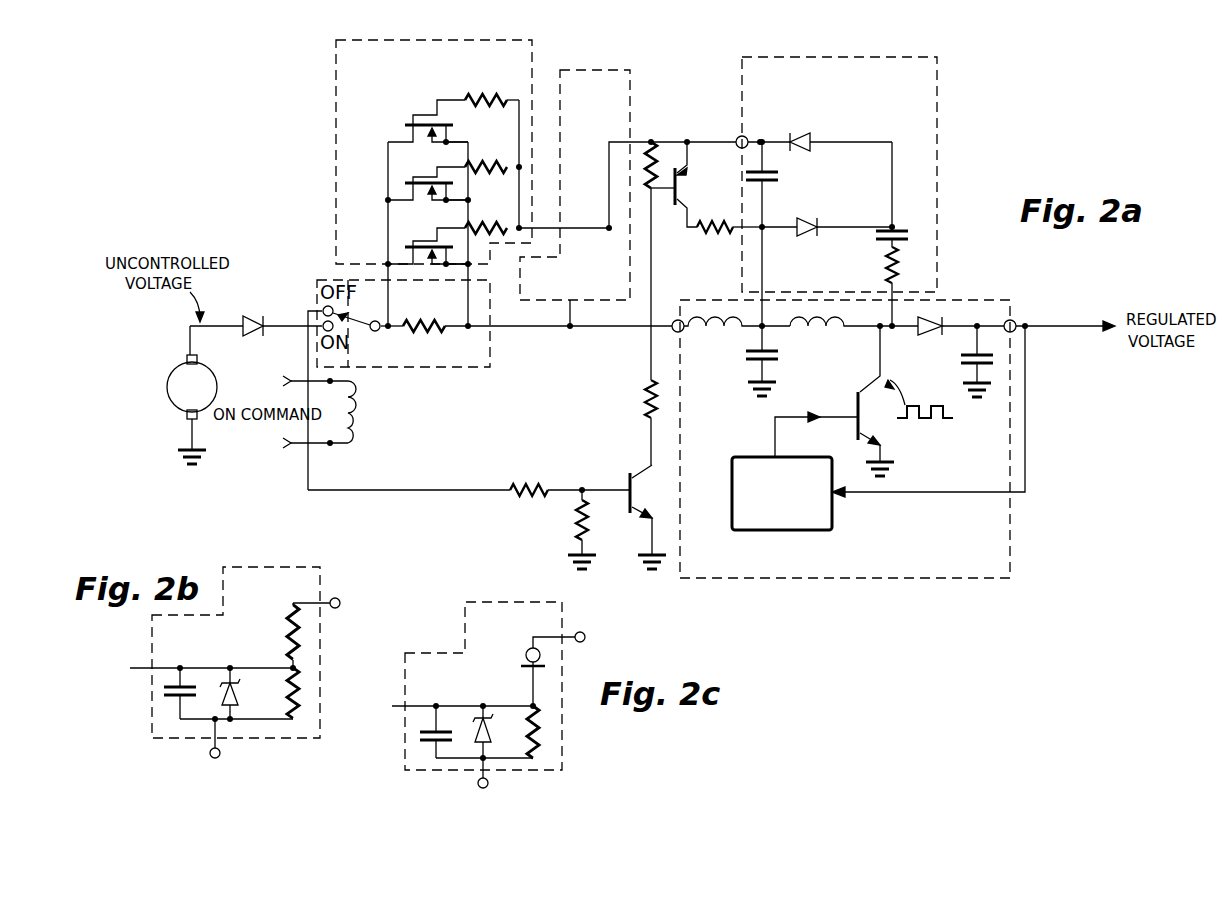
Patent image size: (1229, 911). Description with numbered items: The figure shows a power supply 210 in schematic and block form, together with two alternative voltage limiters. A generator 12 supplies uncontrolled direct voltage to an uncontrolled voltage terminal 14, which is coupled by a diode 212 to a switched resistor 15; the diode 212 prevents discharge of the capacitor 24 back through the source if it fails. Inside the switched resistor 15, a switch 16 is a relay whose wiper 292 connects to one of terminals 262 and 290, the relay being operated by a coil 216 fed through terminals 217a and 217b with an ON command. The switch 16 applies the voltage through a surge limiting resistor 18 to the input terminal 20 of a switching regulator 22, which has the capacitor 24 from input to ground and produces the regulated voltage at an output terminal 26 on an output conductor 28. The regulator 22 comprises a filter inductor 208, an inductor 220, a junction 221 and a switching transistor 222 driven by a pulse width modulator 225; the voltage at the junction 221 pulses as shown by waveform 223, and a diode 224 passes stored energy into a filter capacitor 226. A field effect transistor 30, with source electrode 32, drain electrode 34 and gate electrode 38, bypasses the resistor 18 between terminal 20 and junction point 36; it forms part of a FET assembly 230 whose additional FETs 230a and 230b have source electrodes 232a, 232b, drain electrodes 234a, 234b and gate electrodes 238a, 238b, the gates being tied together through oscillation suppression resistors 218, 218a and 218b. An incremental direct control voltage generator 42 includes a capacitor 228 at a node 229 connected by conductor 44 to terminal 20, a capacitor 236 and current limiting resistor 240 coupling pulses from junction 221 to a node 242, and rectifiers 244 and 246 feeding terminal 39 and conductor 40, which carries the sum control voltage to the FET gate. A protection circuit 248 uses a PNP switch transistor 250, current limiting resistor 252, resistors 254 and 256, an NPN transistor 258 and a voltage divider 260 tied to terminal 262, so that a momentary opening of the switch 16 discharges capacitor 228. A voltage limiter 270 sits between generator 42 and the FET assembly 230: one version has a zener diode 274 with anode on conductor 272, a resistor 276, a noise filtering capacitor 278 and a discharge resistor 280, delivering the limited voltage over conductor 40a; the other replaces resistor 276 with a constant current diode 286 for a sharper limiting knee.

In FIG. 2A, the generator 12 is at (213, 364).
In FIG. 2A, the uncontrolled voltage terminal 14 is at (225, 322).
In FIG. 2A, the switched resistor 15 is at (468, 369).
In FIG. 2A, the switch 16 is at (366, 303).
In FIG. 2A, the surge limiting resistor 18 is at (428, 322).
In FIG. 2A, the input terminal 20 is at (676, 321).
In FIG. 2B, the input terminal 20 is at (220, 755).
In FIG. 2C, the input terminal 20 is at (478, 790).
In FIG. 2A, the switching regulator 22 is at (864, 457).
In FIG. 2A, the capacitor 24 is at (772, 369).
In FIG. 2A, the output terminal 26 is at (1014, 322).
In FIG. 2A, the output conductor 28 is at (1085, 336).
In FIG. 2A, the field effect transistor 30 is at (415, 247).
In FIG. 2A, the source electrode 32 is at (469, 264).
In FIG. 2A, the drain electrode 34 is at (405, 247).
In FIG. 2A, the junction point 36 is at (390, 330).
In FIG. 2A, the gate electrode 38 is at (426, 258).
In FIG. 2A, the terminal 39 is at (738, 138).
In FIG. 2B, the terminal 39 is at (340, 603).
In FIG. 2A, the conductor 40 is at (688, 138).
In FIG. 2B, the conductor 40 is at (330, 601).
In FIG. 2C, the conductor 40 is at (565, 637).
In FIG. 2A, the conductor 40a is at (548, 240).
In FIG. 2B, the conductor 40a is at (141, 668).
In FIG. 2C, the conductor 40a is at (397, 706).
In FIG. 2A, the incremental direct control voltage generator 42 is at (937, 122).
In FIG. 2A, the conductor 44 is at (760, 302).
In FIG. 2A, the filter inductor 208 is at (730, 332).
In FIG. 2A, the power supply 210 is at (880, 613).
In FIG. 2A, the diode 212 is at (245, 316).
In FIG. 2A, the coil 216 is at (356, 406).
In FIG. 2A, the terminal 217a is at (264, 381).
In FIG. 2A, the terminal 217b is at (264, 443).
In FIG. 2A, the oscillation suppression resistor 218 is at (510, 232).
In FIG. 2A, the oscillation suppression resistor 218a is at (496, 170).
In FIG. 2A, the oscillation suppression resistor 218b is at (510, 100).
In FIG. 2A, the inductor 220 is at (810, 330).
In FIG. 2A, the junction 221 is at (880, 330).
In FIG. 2A, the switching transistor 222 is at (857, 417).
In FIG. 2A, the pulsatory waveform 223 is at (921, 421).
In FIG. 2A, the diode 224 is at (938, 337).
In FIG. 2A, the pulse width modulator 225 is at (832, 520).
In FIG. 2A, the filter capacitor 226 is at (967, 366).
In FIG. 2A, the capacitor 228 is at (768, 184).
In FIG. 2A, the node 229 is at (765, 231).
In FIG. 2A, the FET assembly 230 is at (335, 246).
In FIG. 2A, the field effect transistor 230a is at (436, 174).
In FIG. 2A, the field effect transistor 230b is at (412, 88).
In FIG. 2A, the source electrode 232a is at (446, 200).
In FIG. 2A, the source electrode 232b is at (448, 144).
In FIG. 2A, the drain electrode 234a is at (388, 200).
In FIG. 2A, the drain electrode 234b is at (405, 125).
In FIG. 2A, the capacitor 236 is at (883, 242).
In FIG. 2A, the gate electrode 238a is at (412, 178).
In FIG. 2A, the gate electrode 238b is at (442, 118).
In FIG. 2A, the current limiting resistor 240 is at (888, 276).
In FIG. 2A, the node 242 is at (892, 224).
In FIG. 2A, the first rectifier 244 is at (827, 213).
In FIG. 2A, the second rectifier 246 is at (810, 151).
In FIG. 2A, the protection circuit 248 is at (632, 362).
In FIG. 2A, the PNP switch transistor 250 is at (684, 198).
In FIG. 2A, the current limiting resistor 252 is at (702, 252).
In FIG. 2A, the resistor 254 is at (660, 152).
In FIG. 2A, the resistor 256 is at (647, 402).
In FIG. 2A, the NPN transistor 258 is at (630, 472).
In FIG. 2A, the voltage divider 260 is at (549, 476).
In FIG. 2A, the terminal 262 is at (322, 304).
In FIG. 2A, the voltage limiter 270 is at (592, 70).
In FIG. 2B, the voltage limiter 270 is at (320, 670).
In FIG. 2C, the voltage limiter 270 is at (465, 653).
In FIG. 2A, the conductor 272 is at (590, 314).
In FIG. 2B, the conductor 272 is at (212, 753).
In FIG. 2C, the conductor 272 is at (488, 783).
In FIG. 2B, the zener diode 274 is at (245, 684).
In FIG. 2C, the zener diode 274 is at (478, 714).
In FIG. 2B, the resistor 276 is at (288, 630).
In FIG. 2B, the capacitor 278 is at (162, 692).
In FIG. 2C, the capacitor 278 is at (424, 744).
In FIG. 2B, the resistor 280 is at (291, 692).
In FIG. 2C, the resistor 280 is at (543, 737).
In FIG. 2C, the constant current diode 286 is at (524, 657).
In FIG. 2A, the terminal 290 is at (307, 330).
In FIG. 2A, the wiper 292 is at (373, 331).